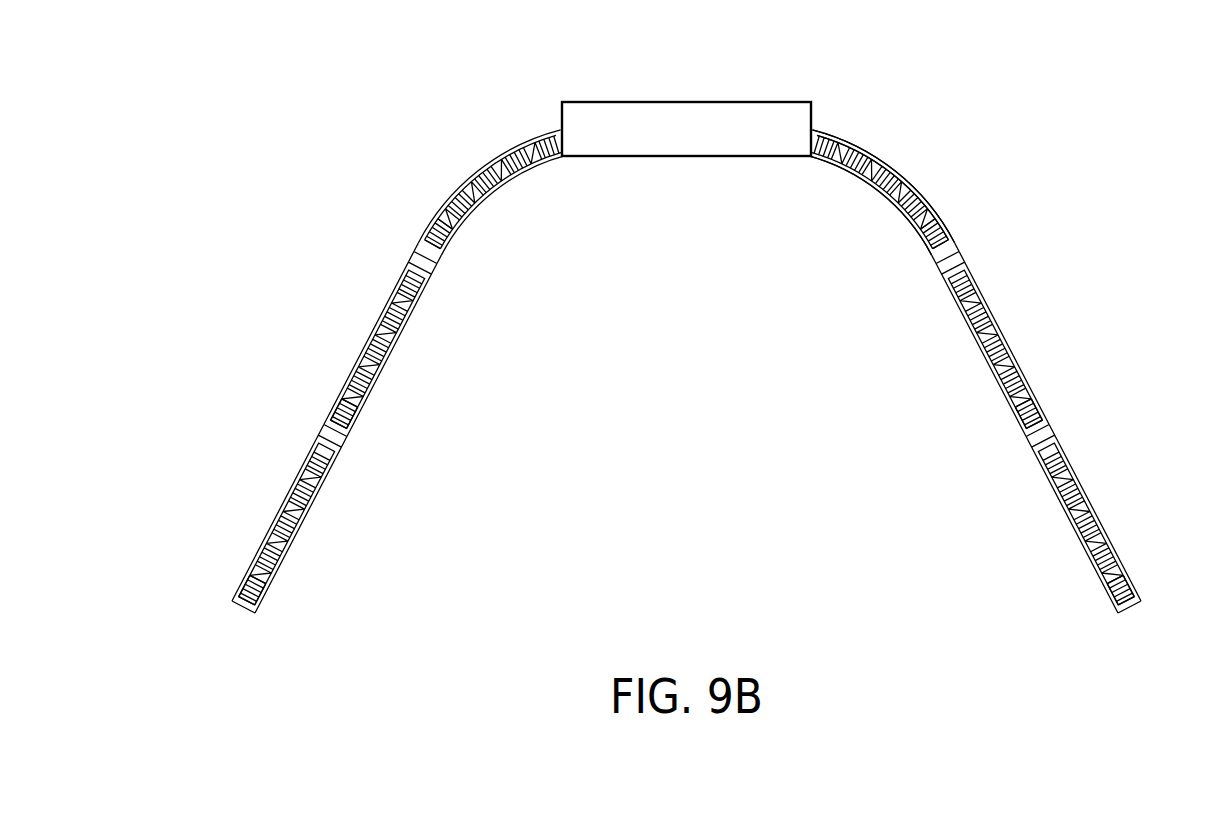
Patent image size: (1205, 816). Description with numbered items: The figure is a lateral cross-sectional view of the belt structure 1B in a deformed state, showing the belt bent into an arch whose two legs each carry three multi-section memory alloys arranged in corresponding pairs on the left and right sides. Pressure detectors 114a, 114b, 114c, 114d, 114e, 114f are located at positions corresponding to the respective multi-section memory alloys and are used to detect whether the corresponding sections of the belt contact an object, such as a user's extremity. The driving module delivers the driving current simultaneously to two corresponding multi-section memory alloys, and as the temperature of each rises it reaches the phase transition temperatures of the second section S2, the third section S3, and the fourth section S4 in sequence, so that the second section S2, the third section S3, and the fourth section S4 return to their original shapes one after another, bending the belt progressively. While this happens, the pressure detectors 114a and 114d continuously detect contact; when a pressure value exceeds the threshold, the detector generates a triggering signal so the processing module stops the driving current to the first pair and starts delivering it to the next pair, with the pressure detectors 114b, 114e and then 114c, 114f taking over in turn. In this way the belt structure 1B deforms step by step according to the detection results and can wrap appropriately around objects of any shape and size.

The belt structure 1B is at (1122, 48).
The pressure detector 114a is at (445, 244).
The pressure detector 114b is at (352, 412).
The pressure detector 114c is at (265, 596).
The pressure detector 114d is at (925, 239).
The pressure detector 114e is at (1020, 414).
The pressure detector 114f is at (1110, 596).
The second section S2 is at (857, 141).
The third section S3 is at (898, 176).
The fourth section S4 is at (938, 211).